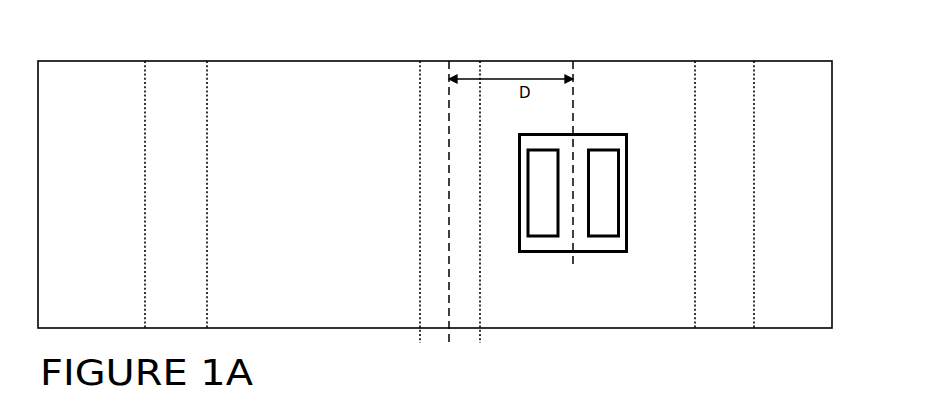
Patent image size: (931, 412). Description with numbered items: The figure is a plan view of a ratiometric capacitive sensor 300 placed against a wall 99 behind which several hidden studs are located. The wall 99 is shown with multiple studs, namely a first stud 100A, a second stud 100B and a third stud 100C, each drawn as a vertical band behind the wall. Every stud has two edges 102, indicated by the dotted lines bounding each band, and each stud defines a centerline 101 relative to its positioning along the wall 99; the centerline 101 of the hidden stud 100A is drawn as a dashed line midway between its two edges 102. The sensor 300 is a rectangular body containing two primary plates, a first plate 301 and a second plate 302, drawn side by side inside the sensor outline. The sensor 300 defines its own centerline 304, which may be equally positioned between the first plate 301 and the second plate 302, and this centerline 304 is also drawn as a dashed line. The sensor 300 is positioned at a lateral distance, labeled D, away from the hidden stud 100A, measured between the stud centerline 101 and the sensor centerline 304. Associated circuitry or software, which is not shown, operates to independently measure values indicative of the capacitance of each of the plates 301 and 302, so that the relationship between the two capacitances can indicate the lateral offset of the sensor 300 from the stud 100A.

The wall 99 is at (313, 77).
The hidden stud 100A is at (463, 68).
The stud 100B is at (723, 78).
The stud 100C is at (175, 75).
The centerline 101 is at (453, 217).
The edges 102 is at (145, 90).
The capacitive sensor 300 is at (597, 130).
The first plate 301 is at (543, 226).
The second plate 302 is at (603, 225).
The centerline 304 is at (575, 177).